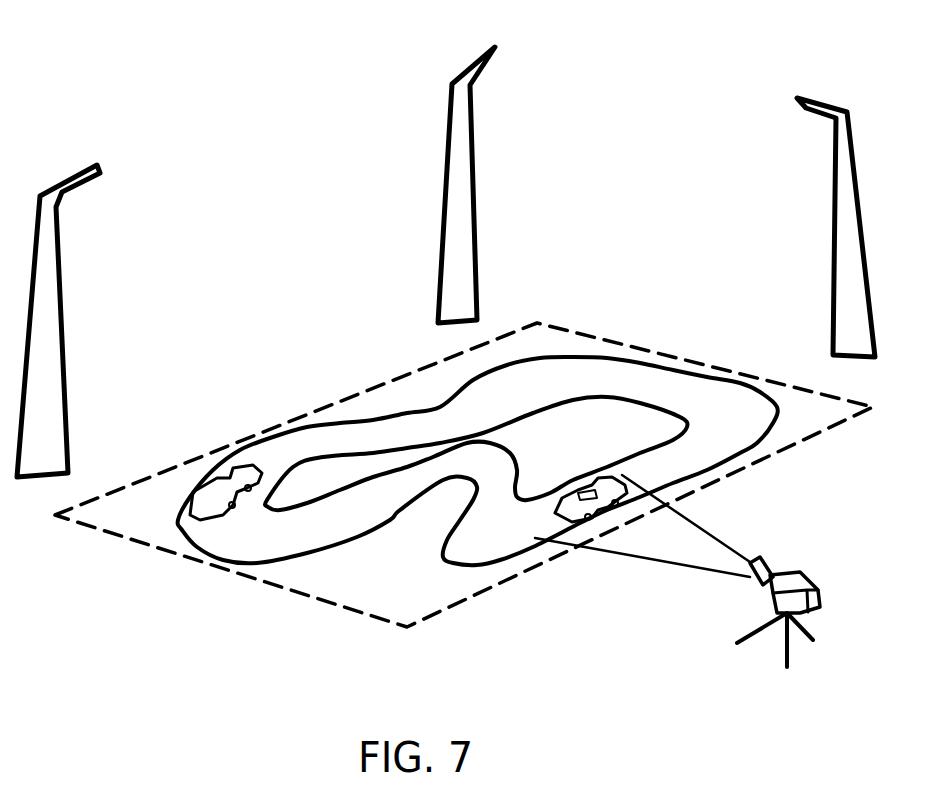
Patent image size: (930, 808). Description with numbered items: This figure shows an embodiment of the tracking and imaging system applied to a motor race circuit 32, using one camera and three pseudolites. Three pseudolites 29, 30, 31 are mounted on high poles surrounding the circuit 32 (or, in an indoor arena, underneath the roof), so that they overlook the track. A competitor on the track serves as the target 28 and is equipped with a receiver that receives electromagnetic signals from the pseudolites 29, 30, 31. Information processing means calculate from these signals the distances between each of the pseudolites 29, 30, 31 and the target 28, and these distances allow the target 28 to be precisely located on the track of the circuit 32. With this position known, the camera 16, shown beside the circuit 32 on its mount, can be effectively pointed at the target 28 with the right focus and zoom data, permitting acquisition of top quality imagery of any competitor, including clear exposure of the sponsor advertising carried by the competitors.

The camera 16 is at (802, 573).
The target 28 is at (607, 523).
The pseudolite 29 is at (110, 200).
The pseudolite 30 is at (500, 87).
The pseudolite 31 is at (793, 127).
The circuit 32 is at (648, 308).